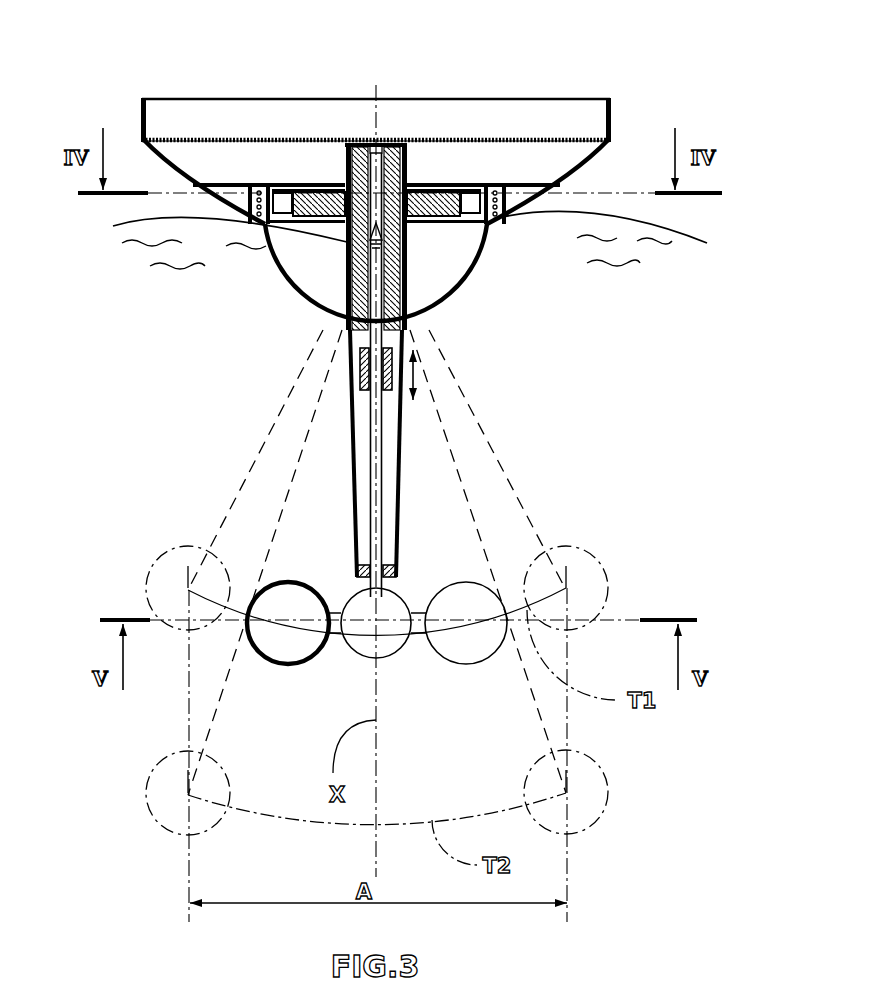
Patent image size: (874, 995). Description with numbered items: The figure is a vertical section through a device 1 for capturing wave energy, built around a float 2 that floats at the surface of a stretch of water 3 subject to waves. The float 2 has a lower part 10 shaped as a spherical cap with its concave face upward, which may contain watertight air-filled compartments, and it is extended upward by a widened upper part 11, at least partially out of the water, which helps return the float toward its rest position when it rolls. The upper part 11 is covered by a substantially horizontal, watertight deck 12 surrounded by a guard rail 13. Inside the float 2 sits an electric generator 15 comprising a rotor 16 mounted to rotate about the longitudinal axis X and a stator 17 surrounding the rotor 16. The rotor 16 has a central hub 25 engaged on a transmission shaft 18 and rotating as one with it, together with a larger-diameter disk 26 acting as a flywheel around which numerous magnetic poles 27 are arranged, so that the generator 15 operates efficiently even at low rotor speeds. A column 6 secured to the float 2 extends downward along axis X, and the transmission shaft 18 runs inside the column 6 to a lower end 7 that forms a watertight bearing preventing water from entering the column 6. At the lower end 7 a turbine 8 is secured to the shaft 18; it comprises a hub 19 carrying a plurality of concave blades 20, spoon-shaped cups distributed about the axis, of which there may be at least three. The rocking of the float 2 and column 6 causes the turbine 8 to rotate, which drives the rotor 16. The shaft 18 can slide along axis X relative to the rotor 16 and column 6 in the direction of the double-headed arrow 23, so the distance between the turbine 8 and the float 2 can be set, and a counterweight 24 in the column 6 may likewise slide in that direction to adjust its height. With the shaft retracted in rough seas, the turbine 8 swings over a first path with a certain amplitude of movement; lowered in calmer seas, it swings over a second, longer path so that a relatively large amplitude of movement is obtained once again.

The device for capturing wave energy 1 is at (186, 330).
The float 2 is at (578, 77).
The stretch of water 3 is at (682, 237).
The column 6 is at (398, 492).
The lower end 7 is at (356, 575).
The turbine 8 is at (389, 682).
The lower part 10 is at (280, 298).
The upper part 11 is at (601, 157).
The deck 12 is at (313, 137).
The guard rail 13 is at (142, 110).
The electric generator 15 is at (428, 162).
The rotor 16 is at (297, 186).
The stator 17 is at (505, 218).
The transmission shaft 18 is at (378, 497).
The hub 19 is at (398, 638).
The concave blades 20 is at (262, 664).
The double-headed arrow 23 is at (417, 375).
The counterweight 24 is at (360, 367).
The central hub 25 is at (395, 157).
The disk 26 is at (430, 181).
The magnetic poles 27 is at (292, 226).